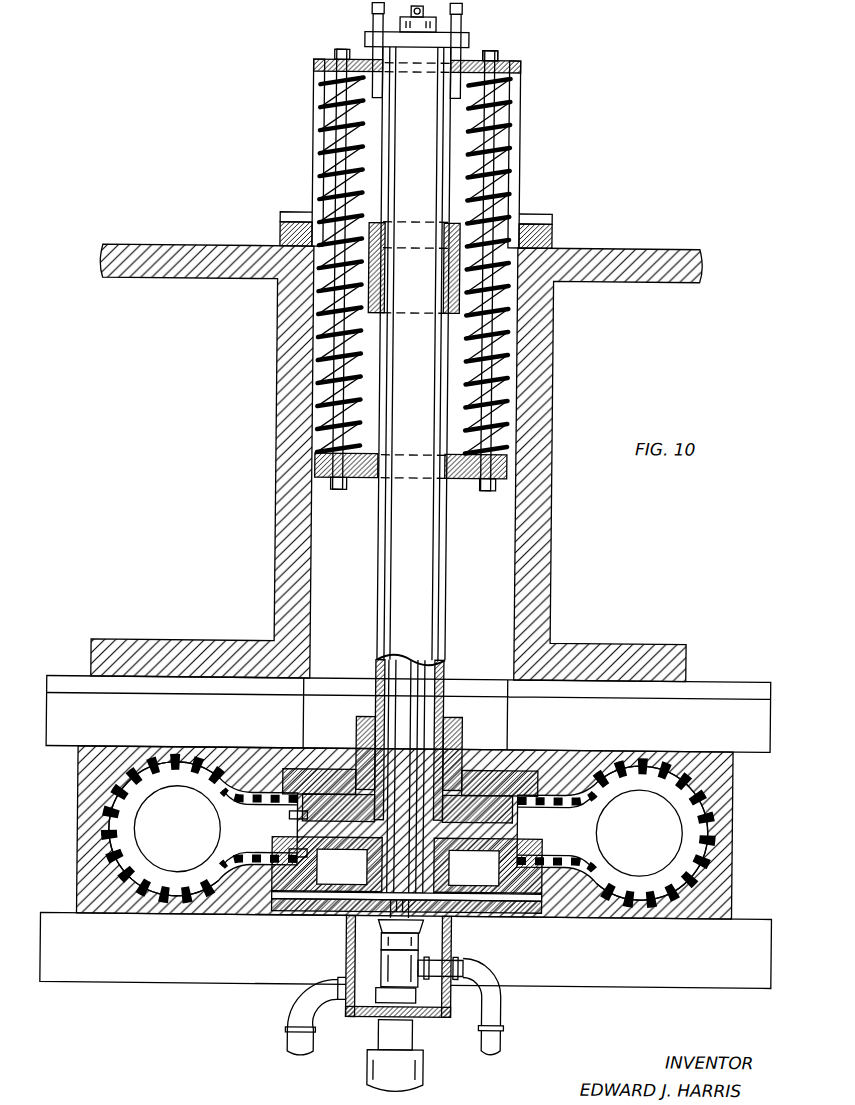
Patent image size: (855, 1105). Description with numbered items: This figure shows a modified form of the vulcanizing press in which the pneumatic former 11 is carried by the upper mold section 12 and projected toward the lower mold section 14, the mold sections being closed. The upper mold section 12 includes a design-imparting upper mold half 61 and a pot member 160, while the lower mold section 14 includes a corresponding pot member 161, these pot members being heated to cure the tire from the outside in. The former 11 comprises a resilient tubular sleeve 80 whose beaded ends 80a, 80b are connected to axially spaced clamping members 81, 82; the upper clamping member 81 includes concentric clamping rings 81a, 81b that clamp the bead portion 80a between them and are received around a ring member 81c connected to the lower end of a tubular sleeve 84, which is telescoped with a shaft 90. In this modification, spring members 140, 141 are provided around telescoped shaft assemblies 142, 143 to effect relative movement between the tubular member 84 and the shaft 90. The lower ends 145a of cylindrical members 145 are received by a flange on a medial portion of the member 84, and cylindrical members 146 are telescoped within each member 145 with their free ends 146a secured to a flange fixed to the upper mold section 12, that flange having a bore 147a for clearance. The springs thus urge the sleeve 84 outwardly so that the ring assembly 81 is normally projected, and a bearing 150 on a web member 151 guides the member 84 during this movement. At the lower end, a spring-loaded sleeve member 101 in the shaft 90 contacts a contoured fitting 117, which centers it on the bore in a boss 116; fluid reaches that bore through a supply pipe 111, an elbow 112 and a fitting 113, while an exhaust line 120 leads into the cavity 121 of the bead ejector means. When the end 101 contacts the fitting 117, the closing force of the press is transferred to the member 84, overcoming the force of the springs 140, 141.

The pneumatic former 11 is at (139, 835).
The upper mold section 12 is at (52, 676).
The lower mold section 14 is at (90, 990).
The upper mold half 61 is at (725, 797).
The resilient tubular sleeve 80 is at (656, 784).
The beaded end 80a is at (292, 818).
The beaded end 80b is at (292, 856).
The clamping member 81 is at (523, 820).
The clamping ring 81a is at (507, 776).
The clamping ring 81b is at (493, 762).
The ring member 81c is at (449, 736).
The clamping member 82 is at (527, 855).
The tubular sleeve 84 is at (380, 540).
The shaft 90 is at (392, 668).
The sleeve member 101 is at (396, 908).
The supply pipe 111 is at (501, 1016).
The elbow 112 is at (496, 975).
The fitting 113 is at (456, 947).
The boss 116 is at (386, 968).
The contoured fitting 117 is at (379, 931).
The exhaust line 120 is at (290, 1046).
The cavity 121 is at (450, 1022).
The spring member 140 is at (515, 173).
The spring member 141 is at (340, 177).
The telescoped shaft assembly 142 is at (505, 153).
The telescoped shaft assembly 143 is at (325, 144).
The cylindrical member 145 is at (320, 368).
The lower end 145a is at (336, 492).
The cylindrical member 146 is at (328, 90).
The free end 146a is at (489, 55).
The bore 147a is at (363, 60).
The bearing 150 is at (545, 240).
The web member 151 is at (521, 216).
The pot member 160 is at (700, 680).
The pot member 161 is at (632, 990).